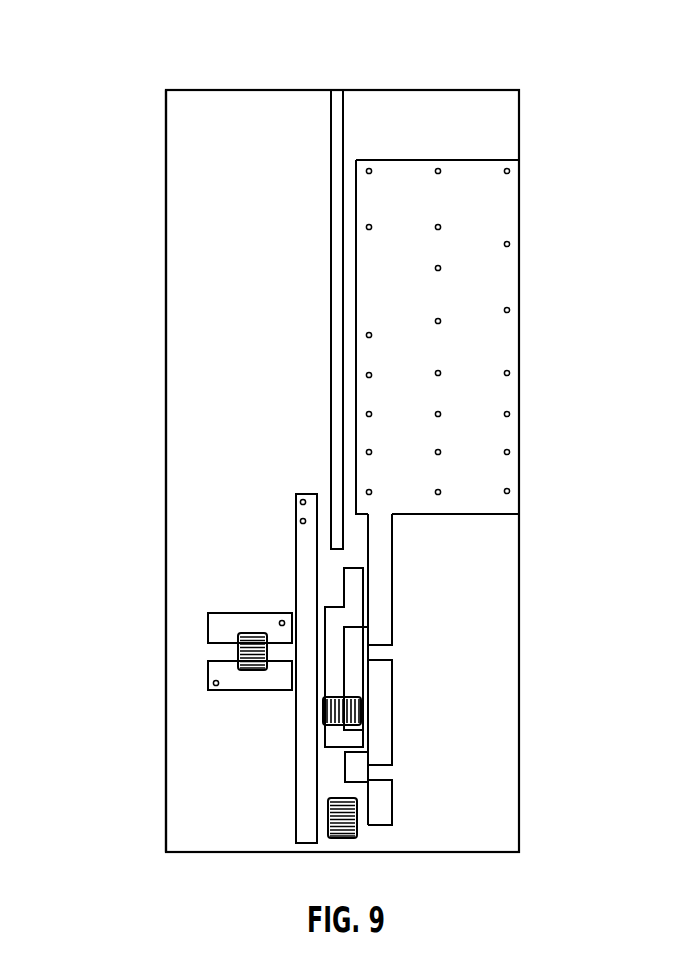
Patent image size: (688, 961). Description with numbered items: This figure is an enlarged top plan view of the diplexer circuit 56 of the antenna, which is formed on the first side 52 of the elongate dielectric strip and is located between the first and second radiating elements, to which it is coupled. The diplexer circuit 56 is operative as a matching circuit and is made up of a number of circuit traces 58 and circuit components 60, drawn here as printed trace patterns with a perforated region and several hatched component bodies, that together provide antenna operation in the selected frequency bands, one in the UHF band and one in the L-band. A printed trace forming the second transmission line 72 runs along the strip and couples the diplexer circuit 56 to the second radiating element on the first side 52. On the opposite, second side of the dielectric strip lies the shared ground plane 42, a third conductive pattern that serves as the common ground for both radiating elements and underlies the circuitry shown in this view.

The shared ground plane 42 is at (178, 402).
The first side 52 is at (220, 118).
The diplexer circuit 56 is at (136, 647).
The circuit traces 58 is at (353, 649).
The circuit components 60 is at (323, 712).
The second transmission line 72 is at (344, 113).